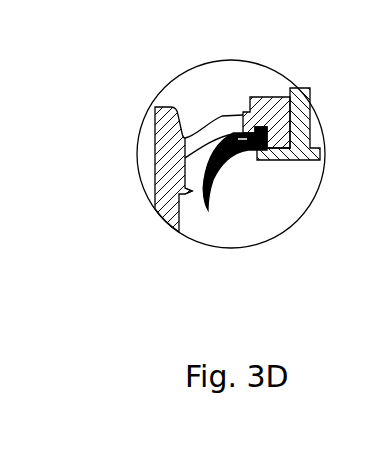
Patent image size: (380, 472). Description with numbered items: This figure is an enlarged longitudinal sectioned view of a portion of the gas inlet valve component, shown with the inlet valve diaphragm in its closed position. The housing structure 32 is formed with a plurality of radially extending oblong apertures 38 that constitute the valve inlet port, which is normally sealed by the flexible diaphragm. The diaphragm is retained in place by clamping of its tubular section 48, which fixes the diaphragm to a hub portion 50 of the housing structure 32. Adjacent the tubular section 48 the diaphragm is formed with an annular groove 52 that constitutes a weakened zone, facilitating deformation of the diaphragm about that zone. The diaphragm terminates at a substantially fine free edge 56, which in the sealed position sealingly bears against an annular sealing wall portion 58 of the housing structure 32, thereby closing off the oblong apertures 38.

The housing structure 32 is at (165, 206).
The radially extending oblong apertures 38 is at (222, 117).
The tubular section 48 is at (292, 96).
The hub portion 50 is at (264, 127).
The annular groove 52 is at (262, 162).
The free edge 56 is at (208, 210).
The annular sealing wall portion 58 is at (189, 190).